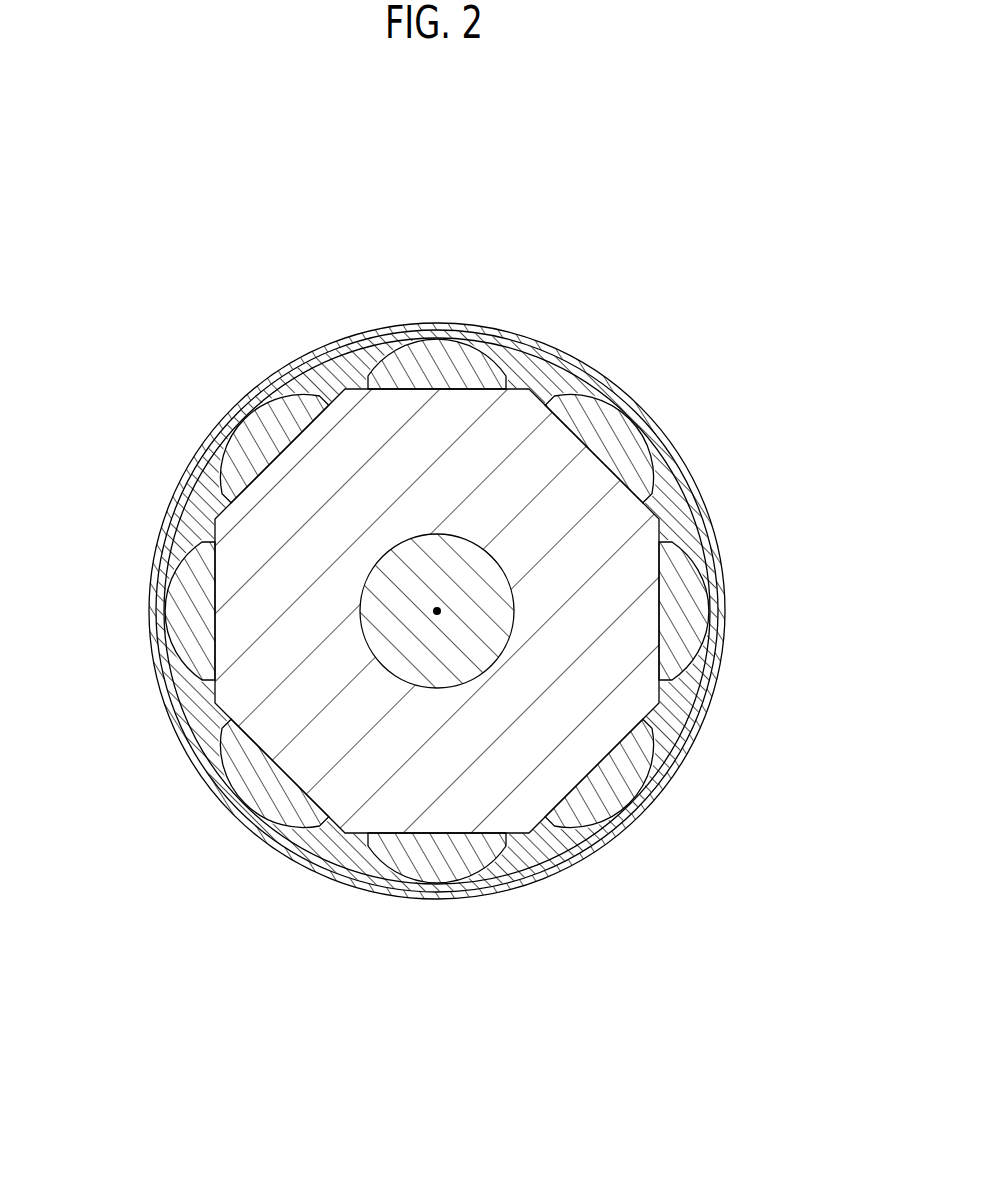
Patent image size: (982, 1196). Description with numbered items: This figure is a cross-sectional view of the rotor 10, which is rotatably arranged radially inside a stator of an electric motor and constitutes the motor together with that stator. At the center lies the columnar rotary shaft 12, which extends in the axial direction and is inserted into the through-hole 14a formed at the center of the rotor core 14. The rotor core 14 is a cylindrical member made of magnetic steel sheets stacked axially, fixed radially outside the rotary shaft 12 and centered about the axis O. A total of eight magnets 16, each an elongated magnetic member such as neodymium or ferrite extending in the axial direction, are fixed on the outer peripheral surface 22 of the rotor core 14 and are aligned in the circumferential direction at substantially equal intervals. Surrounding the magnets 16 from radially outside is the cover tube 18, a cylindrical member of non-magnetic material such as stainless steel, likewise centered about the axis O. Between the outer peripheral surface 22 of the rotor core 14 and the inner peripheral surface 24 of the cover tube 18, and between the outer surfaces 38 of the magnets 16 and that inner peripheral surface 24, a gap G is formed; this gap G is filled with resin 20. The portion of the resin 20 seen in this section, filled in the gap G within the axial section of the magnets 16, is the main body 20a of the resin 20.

The rotor 10 is at (757, 150).
The rotary shaft 12 is at (440, 545).
The rotor core 14 is at (634, 522).
The through-hole 14a is at (511, 610).
The magnets 16 is at (444, 350).
The cover tube 18 is at (340, 338).
The resin 20 is at (521, 886).
The main body 20a is at (533, 372).
The outer peripheral surface 22 is at (180, 497).
The inner peripheral surface 24 is at (576, 866).
The outer surfaces 38 is at (281, 375).
The gap G is at (321, 867).
The axis O is at (437, 611).